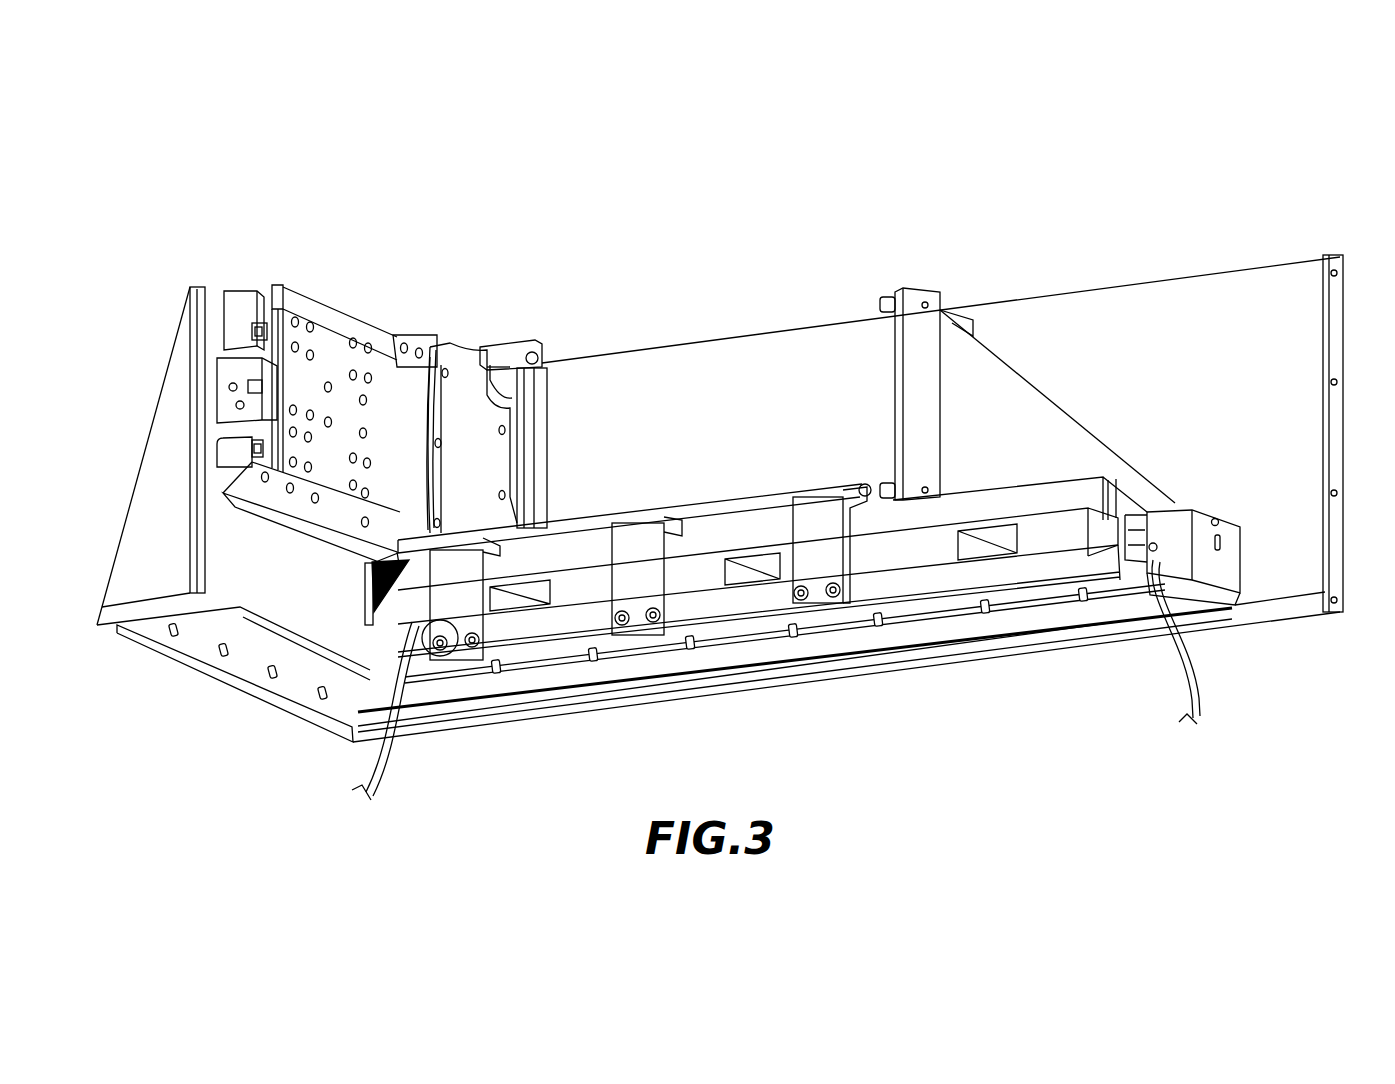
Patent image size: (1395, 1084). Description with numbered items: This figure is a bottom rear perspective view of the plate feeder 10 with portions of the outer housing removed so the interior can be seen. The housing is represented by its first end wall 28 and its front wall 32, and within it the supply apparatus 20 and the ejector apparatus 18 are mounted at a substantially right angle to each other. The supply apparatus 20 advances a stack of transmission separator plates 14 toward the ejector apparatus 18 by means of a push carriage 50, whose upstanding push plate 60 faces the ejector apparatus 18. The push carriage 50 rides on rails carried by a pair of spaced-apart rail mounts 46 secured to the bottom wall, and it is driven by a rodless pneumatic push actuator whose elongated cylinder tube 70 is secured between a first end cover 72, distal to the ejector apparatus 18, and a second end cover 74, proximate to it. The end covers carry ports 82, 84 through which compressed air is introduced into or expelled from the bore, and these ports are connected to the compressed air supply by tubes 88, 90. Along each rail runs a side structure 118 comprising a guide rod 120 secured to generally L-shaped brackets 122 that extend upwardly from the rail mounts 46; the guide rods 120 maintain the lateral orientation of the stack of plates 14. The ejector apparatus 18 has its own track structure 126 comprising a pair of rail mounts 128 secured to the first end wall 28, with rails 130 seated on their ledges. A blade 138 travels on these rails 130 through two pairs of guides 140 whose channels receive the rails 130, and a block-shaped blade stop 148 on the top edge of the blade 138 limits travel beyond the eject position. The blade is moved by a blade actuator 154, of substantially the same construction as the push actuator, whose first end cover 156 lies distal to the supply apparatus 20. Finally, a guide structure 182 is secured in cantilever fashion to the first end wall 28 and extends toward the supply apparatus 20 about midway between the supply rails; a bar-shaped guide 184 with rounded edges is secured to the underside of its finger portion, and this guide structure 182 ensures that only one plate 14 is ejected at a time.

The plate feeder 10 is at (200, 235).
The transmission separator plate 14 is at (502, 346).
The ejector apparatus 18 is at (374, 307).
The supply apparatus 20 is at (1012, 325).
The first end wall 28 is at (223, 548).
The front wall 32 is at (1233, 308).
The rail mounts 46 is at (1000, 575).
The push carriage 50 is at (1055, 382).
The push plate 60 is at (895, 398).
The cylinder tube 70 is at (760, 653).
The first end cover 72 is at (1237, 535).
The second end cover 74 is at (342, 625).
The port 82 is at (1150, 558).
The port 84 is at (446, 650).
The tube 88 is at (1192, 668).
The tube 90 is at (375, 760).
The side structures 118 is at (713, 628).
The guide rod 120 is at (712, 510).
The brackets 122 is at (817, 560).
The track structure 126 is at (210, 442).
The rail mounts 128 is at (237, 297).
The rails 130 is at (255, 333).
The blade 138 is at (401, 372).
The guides 140 is at (253, 325).
The blade stop 148 is at (298, 300).
The blade actuator 154 is at (213, 387).
The first end cover 156 is at (222, 369).
The guide structure 182 is at (556, 344).
The guide 184 is at (513, 358).